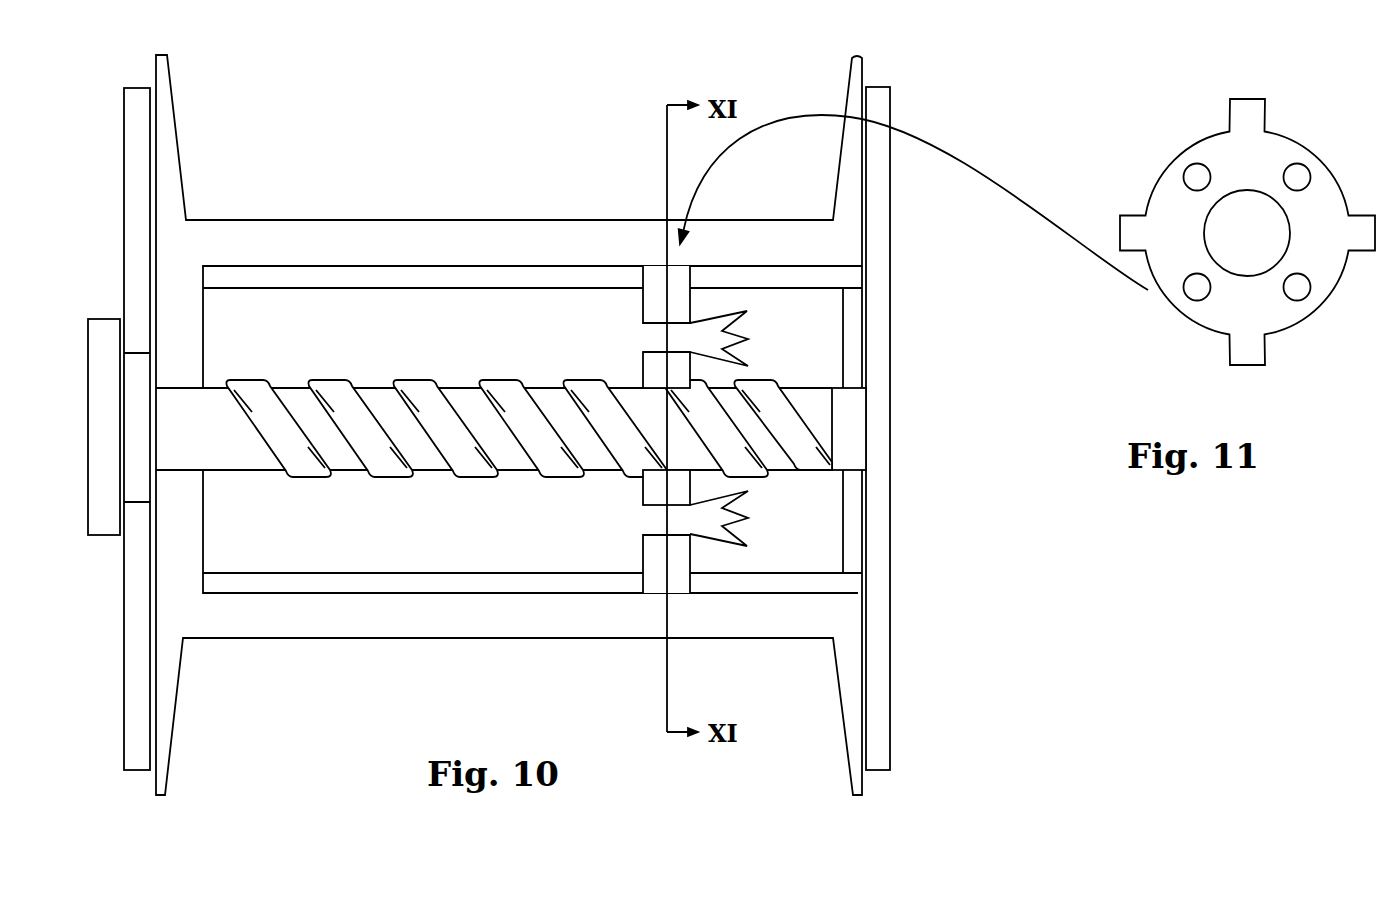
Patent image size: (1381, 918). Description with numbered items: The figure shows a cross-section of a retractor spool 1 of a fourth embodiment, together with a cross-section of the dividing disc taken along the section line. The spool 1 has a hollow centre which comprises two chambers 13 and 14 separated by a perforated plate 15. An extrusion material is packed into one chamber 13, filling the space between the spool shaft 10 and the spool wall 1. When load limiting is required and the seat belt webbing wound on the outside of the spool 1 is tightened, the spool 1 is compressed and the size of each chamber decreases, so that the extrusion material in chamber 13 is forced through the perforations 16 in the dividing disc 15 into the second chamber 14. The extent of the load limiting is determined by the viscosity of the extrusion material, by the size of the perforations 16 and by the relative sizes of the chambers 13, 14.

In FIG. 10, the spool 1 is at (380, 220).
In FIG. 10, the spool shaft 10 is at (289, 383).
In FIG. 10, the chamber 13 is at (432, 316).
In FIG. 10, the second chamber 14 is at (793, 323).
In FIG. 10, the perforated plate 15 is at (678, 557).
In FIG. 11, the perforated plate 15 is at (1158, 173).
In FIG. 10, the perforations 16 is at (652, 337).
In FIG. 11, the perforations 16 is at (1197, 177).